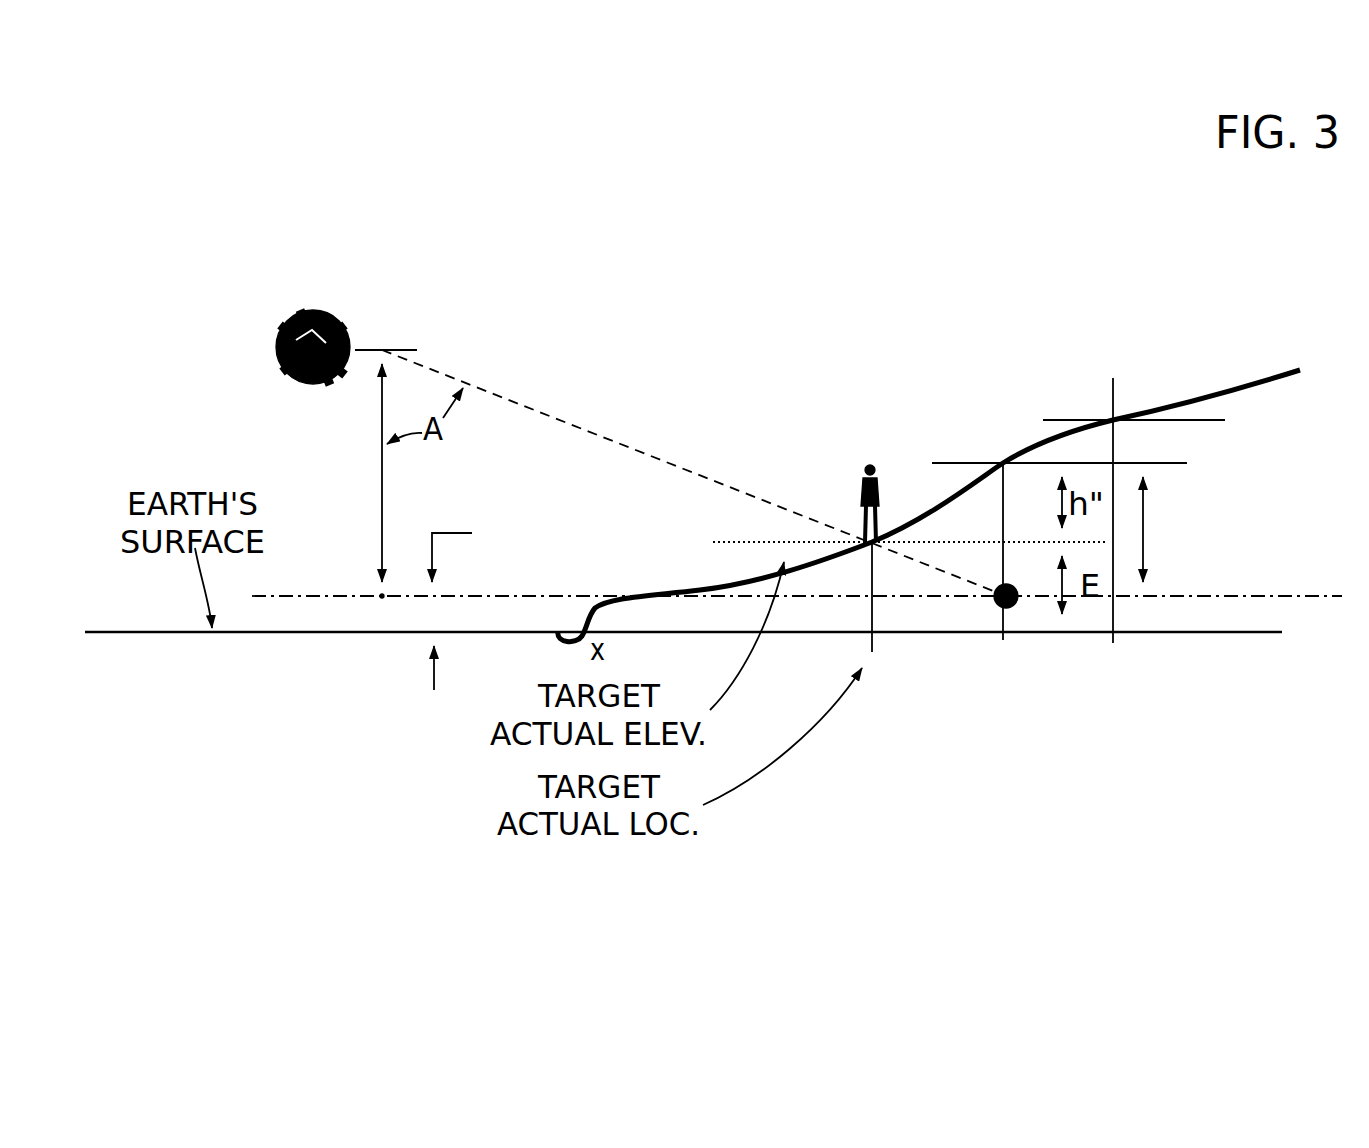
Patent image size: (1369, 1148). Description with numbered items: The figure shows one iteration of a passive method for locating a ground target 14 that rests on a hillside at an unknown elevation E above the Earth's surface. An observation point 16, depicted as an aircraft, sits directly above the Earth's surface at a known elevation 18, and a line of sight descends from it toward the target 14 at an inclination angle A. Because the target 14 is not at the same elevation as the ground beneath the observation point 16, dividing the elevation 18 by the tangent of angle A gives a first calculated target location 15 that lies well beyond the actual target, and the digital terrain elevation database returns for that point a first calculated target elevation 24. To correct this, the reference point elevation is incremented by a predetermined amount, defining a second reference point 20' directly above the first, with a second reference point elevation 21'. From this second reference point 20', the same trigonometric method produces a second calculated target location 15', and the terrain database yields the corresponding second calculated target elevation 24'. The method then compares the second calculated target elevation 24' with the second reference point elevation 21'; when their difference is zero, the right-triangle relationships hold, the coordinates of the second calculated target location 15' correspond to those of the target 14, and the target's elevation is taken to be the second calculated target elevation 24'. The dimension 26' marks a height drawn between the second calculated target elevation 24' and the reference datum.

The ground target 14 is at (874, 483).
The calculated target location 15 is at (1169, 585).
The second calculated target location 15' is at (926, 680).
The observation point 16 is at (382, 336).
The known elevation of the observation point 18 is at (363, 473).
The second reference point 20' is at (256, 676).
The second reference point elevation 21' is at (477, 548).
The calculated target elevation 24 is at (1024, 331).
The second calculated target elevation 24' is at (863, 389).
The elevation difference 26' is at (1164, 529).